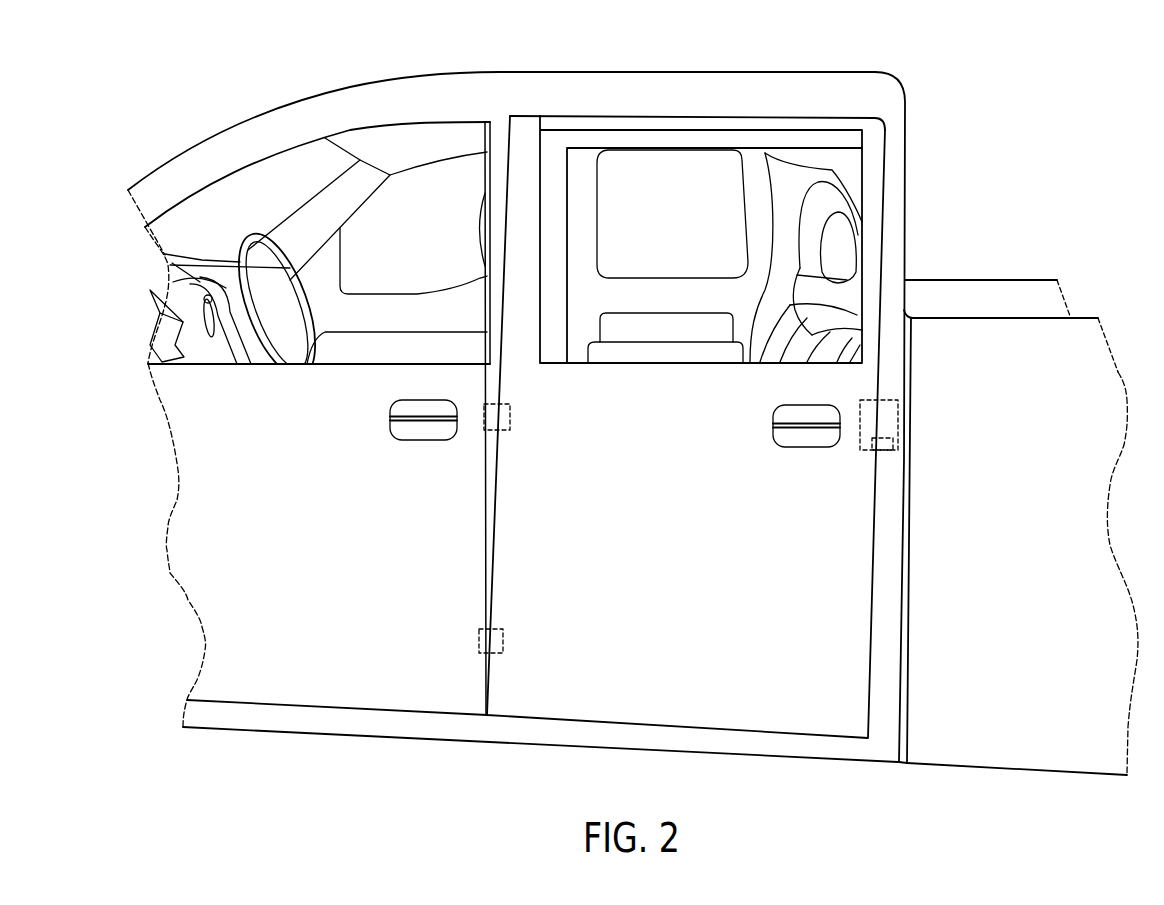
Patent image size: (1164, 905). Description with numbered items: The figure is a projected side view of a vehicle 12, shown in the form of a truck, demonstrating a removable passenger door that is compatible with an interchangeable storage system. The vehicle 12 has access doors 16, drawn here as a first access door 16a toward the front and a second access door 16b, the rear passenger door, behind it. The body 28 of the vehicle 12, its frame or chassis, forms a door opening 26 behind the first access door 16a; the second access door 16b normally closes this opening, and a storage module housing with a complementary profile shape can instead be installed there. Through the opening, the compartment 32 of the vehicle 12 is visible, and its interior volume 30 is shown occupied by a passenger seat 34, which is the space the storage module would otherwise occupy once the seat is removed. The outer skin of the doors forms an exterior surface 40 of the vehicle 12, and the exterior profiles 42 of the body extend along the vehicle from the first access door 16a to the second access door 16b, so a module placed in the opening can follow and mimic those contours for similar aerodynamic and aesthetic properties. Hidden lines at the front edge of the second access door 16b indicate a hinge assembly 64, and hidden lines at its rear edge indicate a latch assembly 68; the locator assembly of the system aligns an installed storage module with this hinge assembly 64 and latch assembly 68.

The vehicle 12 is at (200, 88).
The access door 16 is at (591, 375).
The first access door 16a is at (402, 548).
The second access door 16b is at (707, 375).
The door opening 26 is at (787, 191).
The body 28 is at (703, 97).
The interior volume 30 is at (787, 191).
The compartment 32 is at (844, 153).
The passenger seat 34 is at (845, 310).
The exterior surface 40 is at (621, 188).
The exterior profiles 42 is at (579, 141).
The hinge assembly 64 is at (484, 405).
The latch assembly 68 is at (898, 402).